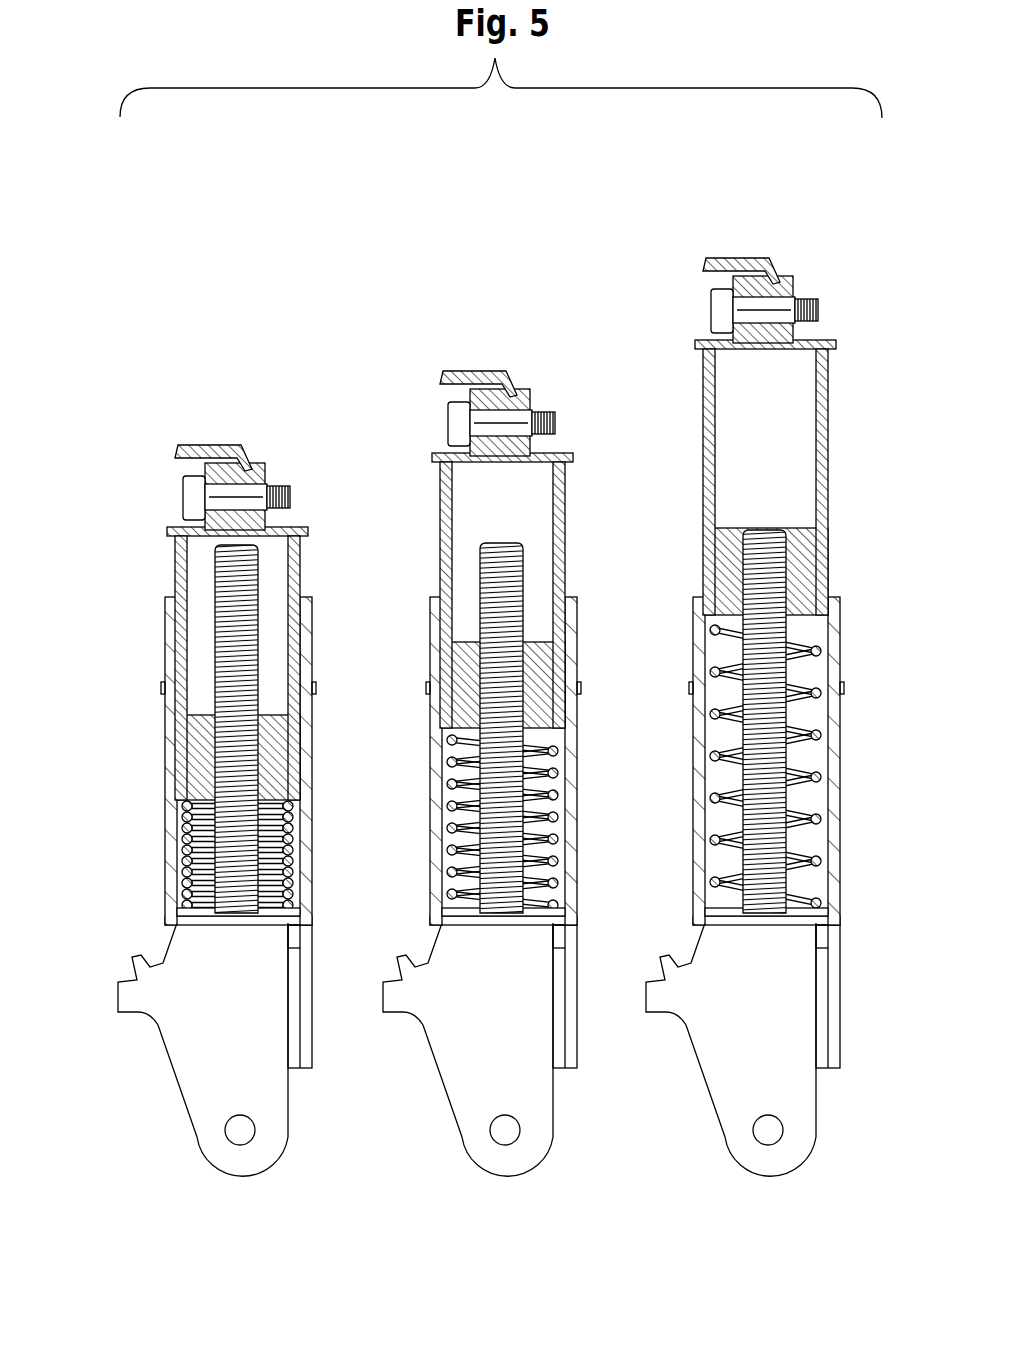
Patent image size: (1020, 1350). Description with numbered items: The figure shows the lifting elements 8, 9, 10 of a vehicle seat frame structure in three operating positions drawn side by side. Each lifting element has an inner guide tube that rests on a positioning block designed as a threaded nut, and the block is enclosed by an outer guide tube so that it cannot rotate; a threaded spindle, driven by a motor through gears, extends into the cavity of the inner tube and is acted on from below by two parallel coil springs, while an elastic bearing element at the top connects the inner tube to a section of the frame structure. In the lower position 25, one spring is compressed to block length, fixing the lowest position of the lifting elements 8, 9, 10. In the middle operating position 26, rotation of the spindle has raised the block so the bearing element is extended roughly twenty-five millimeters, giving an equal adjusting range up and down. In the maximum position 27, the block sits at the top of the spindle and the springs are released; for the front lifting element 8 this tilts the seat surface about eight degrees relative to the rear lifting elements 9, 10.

The front lifting element 8 is at (403, 208).
The rear lifting element 9 is at (477, 228).
The rear lifting element 10 is at (576, 201).
The lower position 25 is at (245, 370).
The middle operating position 26 is at (518, 306).
The maximum position 27 is at (773, 228).